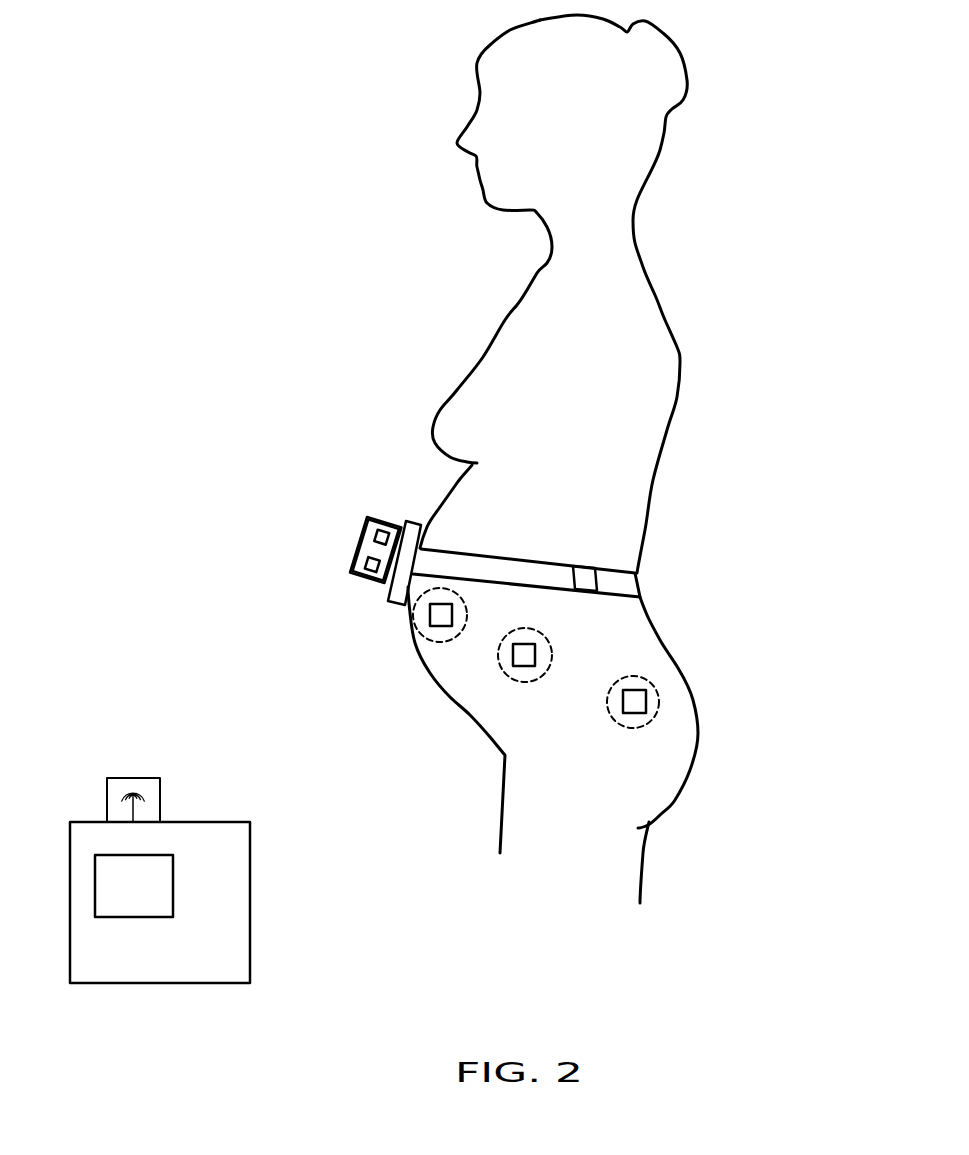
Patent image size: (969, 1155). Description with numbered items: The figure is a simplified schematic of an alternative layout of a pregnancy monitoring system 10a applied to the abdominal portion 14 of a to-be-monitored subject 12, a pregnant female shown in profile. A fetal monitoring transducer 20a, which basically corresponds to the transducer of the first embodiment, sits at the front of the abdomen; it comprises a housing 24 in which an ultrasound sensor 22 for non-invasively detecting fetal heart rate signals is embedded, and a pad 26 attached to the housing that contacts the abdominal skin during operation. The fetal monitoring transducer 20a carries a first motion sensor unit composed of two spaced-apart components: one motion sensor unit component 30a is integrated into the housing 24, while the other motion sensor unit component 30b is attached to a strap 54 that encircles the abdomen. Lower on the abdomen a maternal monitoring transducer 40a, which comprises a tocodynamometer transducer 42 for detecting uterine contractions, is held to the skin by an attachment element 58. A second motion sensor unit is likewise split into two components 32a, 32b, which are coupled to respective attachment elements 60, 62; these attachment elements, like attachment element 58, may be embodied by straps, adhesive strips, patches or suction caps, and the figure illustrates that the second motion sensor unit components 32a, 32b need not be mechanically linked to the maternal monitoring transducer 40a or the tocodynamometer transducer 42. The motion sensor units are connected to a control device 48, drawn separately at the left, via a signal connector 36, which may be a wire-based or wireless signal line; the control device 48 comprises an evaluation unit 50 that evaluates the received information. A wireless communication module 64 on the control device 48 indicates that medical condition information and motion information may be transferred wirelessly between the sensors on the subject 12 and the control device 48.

The pregnancy monitoring system 10a is at (174, 299).
The to-be-monitored subject 12 is at (441, 285).
The abdominal portion 14 is at (437, 693).
The fetal monitoring transducer 20a is at (336, 520).
The ultrasound sensor 22 is at (383, 527).
The housing 24 is at (357, 550).
The pad 26 is at (393, 600).
The motion sensor unit component 30a is at (368, 578).
The motion sensor unit component 30b is at (585, 572).
The second motion sensor unit component 32a is at (430, 625).
The second motion sensor unit component 32b is at (645, 700).
The signal connector 36 is at (248, 730).
The maternal monitoring transducer 40a is at (534, 701).
The tocodynamometer transducer 42 is at (518, 658).
The control device 48 is at (95, 1000).
The evaluation unit 50 is at (143, 898).
The strap 54 is at (510, 573).
The attachment element 58 is at (510, 680).
The attachment element 60 is at (415, 630).
The attachment element 62 is at (655, 713).
The wireless communication module 64 is at (107, 793).